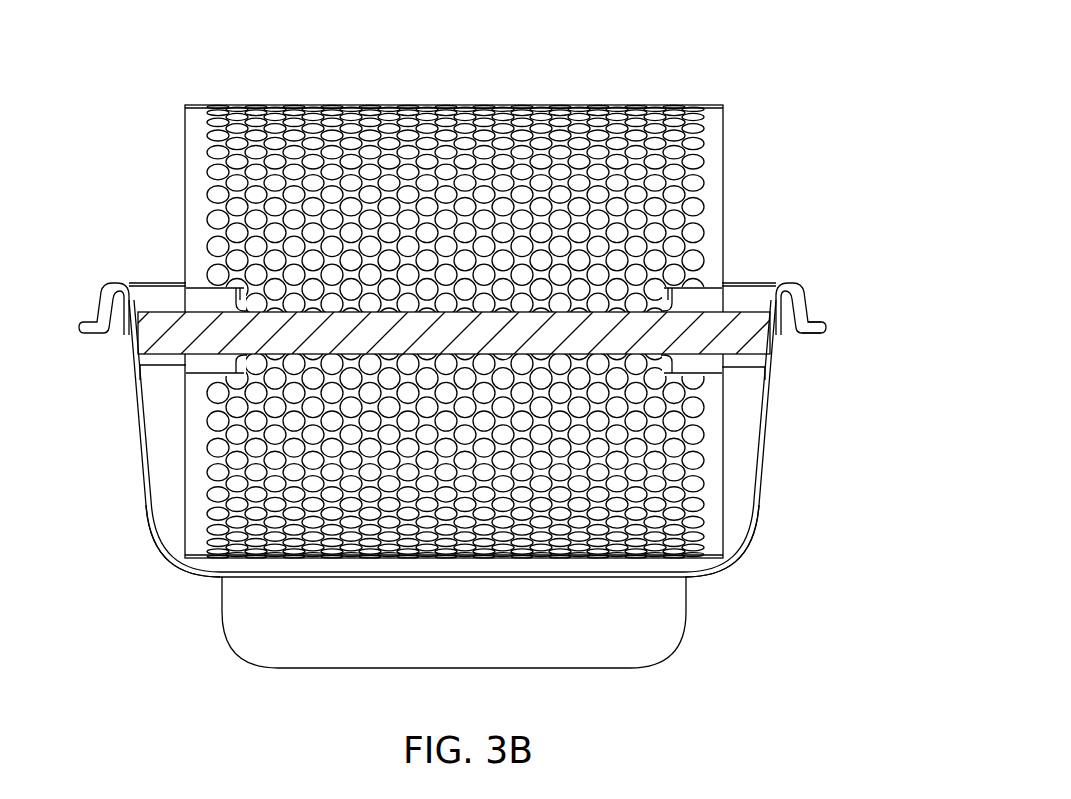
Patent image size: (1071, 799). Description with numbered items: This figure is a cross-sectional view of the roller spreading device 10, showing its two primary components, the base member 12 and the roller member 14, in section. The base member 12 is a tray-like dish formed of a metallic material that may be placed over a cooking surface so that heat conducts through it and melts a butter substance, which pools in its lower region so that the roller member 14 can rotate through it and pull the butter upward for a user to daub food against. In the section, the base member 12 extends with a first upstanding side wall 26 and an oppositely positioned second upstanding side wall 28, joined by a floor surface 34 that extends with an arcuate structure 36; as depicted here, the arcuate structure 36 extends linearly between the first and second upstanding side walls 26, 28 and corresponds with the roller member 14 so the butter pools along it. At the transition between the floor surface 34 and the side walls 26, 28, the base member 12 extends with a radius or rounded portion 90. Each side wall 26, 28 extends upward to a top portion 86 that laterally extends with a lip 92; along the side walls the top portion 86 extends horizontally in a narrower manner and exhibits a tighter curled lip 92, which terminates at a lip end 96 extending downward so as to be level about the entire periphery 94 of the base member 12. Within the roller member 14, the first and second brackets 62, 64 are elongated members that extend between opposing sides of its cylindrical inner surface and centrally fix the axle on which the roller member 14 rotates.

The roller spreading device 10 is at (893, 76).
The base member 12 is at (768, 517).
The roller member 14 is at (733, 97).
The first upstanding side wall 26 is at (186, 465).
The second upstanding side wall 28 is at (725, 462).
The floor surface 34 is at (655, 566).
The arcuate structure 36 is at (605, 583).
The first bracket 62 is at (196, 298).
The second bracket 64 is at (703, 293).
The top portion 86 is at (806, 281).
The rounded portion 90 is at (163, 545).
The lip 92 is at (821, 313).
The periphery 94 is at (88, 289).
The lip end 96 is at (828, 328).